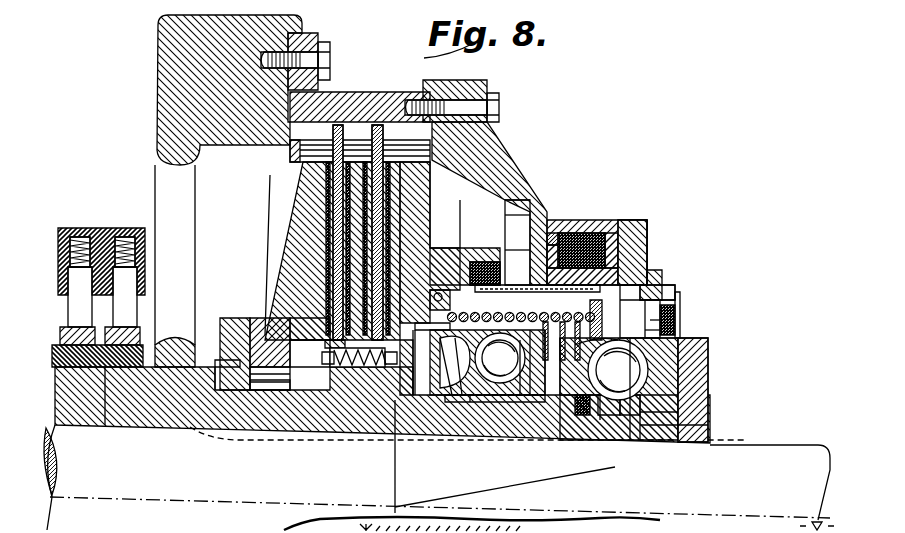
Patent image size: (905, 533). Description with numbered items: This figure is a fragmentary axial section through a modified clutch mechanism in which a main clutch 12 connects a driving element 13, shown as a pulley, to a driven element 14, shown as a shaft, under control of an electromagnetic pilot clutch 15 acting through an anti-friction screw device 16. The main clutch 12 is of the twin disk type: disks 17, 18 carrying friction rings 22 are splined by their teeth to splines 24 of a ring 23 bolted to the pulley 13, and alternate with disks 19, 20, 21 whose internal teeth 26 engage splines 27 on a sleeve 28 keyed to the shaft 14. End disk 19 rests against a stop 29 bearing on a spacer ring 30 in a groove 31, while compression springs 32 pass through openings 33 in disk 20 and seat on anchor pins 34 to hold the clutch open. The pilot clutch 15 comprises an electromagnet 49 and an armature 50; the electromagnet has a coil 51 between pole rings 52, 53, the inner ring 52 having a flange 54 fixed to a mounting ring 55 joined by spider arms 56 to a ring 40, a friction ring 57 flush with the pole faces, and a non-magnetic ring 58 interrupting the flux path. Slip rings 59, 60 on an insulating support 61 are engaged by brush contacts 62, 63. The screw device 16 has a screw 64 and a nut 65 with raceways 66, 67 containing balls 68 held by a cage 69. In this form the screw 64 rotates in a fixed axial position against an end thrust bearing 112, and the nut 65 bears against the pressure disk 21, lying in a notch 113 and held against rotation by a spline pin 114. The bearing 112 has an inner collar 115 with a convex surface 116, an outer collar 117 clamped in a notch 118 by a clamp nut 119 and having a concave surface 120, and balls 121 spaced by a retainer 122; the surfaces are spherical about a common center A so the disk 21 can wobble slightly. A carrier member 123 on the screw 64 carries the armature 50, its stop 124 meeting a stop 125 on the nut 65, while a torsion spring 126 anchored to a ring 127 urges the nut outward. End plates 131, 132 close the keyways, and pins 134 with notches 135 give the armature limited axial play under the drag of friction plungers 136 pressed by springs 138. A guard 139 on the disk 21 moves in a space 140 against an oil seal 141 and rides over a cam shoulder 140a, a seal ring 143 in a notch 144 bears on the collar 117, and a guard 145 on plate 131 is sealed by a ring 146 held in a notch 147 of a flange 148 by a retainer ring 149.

The main clutch 12 is at (272, 242).
The driving element 13 is at (163, 118).
The driven element 14 is at (800, 456).
The pilot clutch 15 is at (646, 212).
The anti-friction screw device 16 is at (446, 380).
The disk 17 is at (360, 95).
The disk 18 is at (395, 112).
The disk 19 is at (300, 262).
The disk 20 is at (345, 196).
The pressure disk 21 is at (455, 215).
The annular friction rings 22 is at (388, 250).
The ring 23 is at (320, 90).
The longitudinal splines 24 is at (304, 136).
The teeth 26 is at (280, 391).
The straight longitudinal splines 27 is at (268, 391).
The elongated sleeve 28 is at (668, 430).
The fixed stop 29 is at (228, 368).
The spacer ring 30 is at (255, 318).
The annular groove 31 is at (272, 318).
The coiled compression springs 32 is at (310, 368).
The openings 33 is at (333, 368).
The anchor pins 34 is at (365, 368).
The ring 40 is at (440, 210).
The annular electromagnet 49 is at (600, 214).
The armature 50 is at (640, 235).
The annular coil 51 is at (576, 222).
The inner ring 52 is at (550, 276).
The outer ring 53 is at (620, 220).
The outer peripheral flange 54 is at (550, 255).
The mounting ring 55 is at (528, 210).
The spider arms 56 is at (505, 160).
The flat ring of friction material 57 is at (632, 270).
The thin ring of non-magnetic material 58 is at (556, 232).
The slip ring 59 is at (98, 323).
The slip ring 60 is at (140, 335).
The support 61 is at (106, 372).
The brush contact 62 is at (125, 300).
The brush contact 63 is at (95, 307).
The screw 64 is at (548, 396).
The nut 65 is at (438, 395).
The raceway 66 is at (500, 376).
The raceway 67 is at (540, 320).
The anti-friction balls 68 is at (522, 396).
The retainer ring or cage 69 is at (532, 396).
The end thrust bearing 112 is at (612, 415).
The inner peripheral notch 113 is at (415, 396).
The spline pin 114 is at (402, 396).
The inner collar 115 is at (600, 425).
The annular bearing surface 116 is at (565, 400).
The outer collar 117 is at (708, 374).
The notch 118 is at (708, 404).
The clamp nut 119 is at (708, 392).
The bearing surface 120 is at (708, 360).
The balls 121 is at (708, 422).
The retainer 122 is at (630, 420).
The annular carrier member 123 is at (684, 320).
The stop 124 is at (592, 320).
The stop 125 is at (545, 292).
The coiled torsion spring 126 is at (504, 312).
The anchor ring 127 is at (453, 300).
The end plate 131 is at (660, 290).
The end plate 132 is at (676, 326).
The pins 134 is at (664, 310).
The longitudinal notch 135 is at (662, 300).
The friction plungers 136 is at (676, 310).
The compression springs 138 is at (678, 320).
The cylindrical guard 139 is at (448, 402).
The peripheral space 140 is at (480, 403).
The cam shoulder 140a is at (660, 440).
The oil seal 141 is at (578, 415).
The oil seal ring 143 is at (680, 338).
The annular notch 144 is at (678, 332).
The cylindrical guard 145 is at (512, 262).
The oil seal ring 146 is at (460, 250).
The inner peripheral notch 147 is at (507, 240).
The annular flange 148 is at (455, 240).
The retainer ring 149 is at (510, 250).
The common center A is at (389, 497).